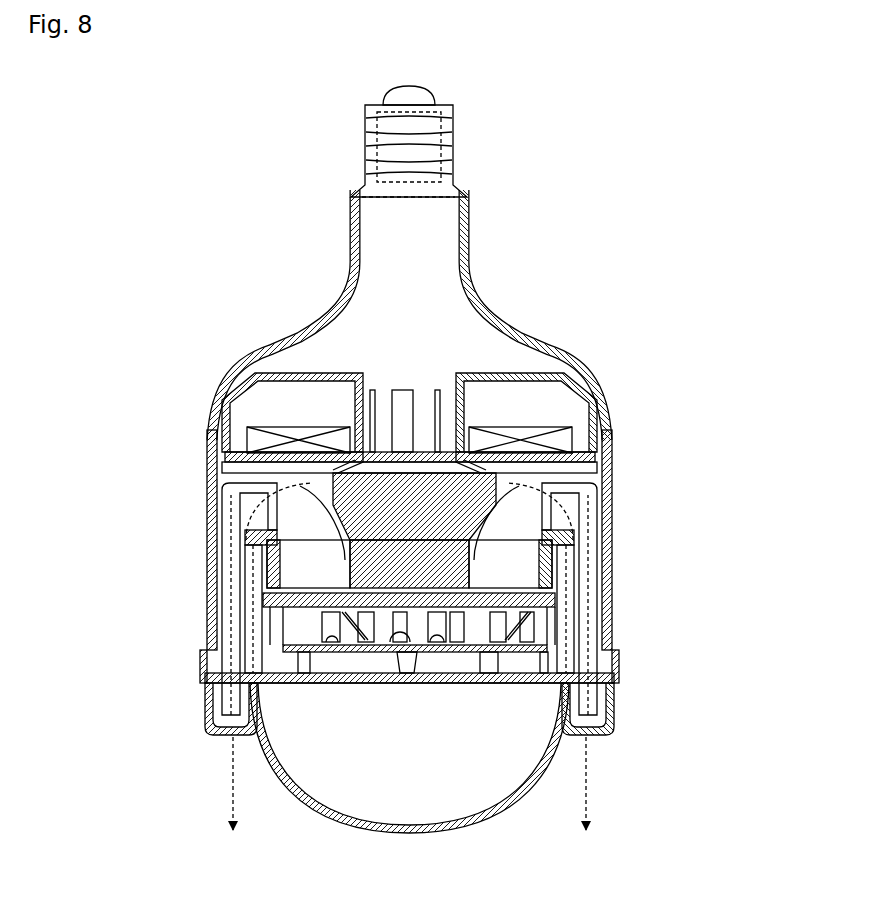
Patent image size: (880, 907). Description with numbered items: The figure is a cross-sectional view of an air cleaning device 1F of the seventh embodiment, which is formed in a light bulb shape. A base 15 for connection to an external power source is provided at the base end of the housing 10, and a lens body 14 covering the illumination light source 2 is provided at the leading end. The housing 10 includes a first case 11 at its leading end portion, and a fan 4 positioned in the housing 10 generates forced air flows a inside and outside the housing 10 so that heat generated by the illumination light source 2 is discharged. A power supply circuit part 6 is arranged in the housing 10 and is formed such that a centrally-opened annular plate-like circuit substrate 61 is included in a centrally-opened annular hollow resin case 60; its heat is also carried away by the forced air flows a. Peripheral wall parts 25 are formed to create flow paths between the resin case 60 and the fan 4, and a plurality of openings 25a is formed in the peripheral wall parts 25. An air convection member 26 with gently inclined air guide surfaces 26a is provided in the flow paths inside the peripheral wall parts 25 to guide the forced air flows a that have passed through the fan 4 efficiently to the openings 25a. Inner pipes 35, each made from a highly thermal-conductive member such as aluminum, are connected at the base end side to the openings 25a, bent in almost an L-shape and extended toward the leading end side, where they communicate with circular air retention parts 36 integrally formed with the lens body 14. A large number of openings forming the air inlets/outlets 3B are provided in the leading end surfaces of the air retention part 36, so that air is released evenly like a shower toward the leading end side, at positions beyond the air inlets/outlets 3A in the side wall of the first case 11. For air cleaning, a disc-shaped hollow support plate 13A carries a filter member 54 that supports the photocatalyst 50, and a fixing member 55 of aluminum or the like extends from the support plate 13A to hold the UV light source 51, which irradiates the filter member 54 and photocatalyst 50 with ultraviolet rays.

The air cleaning device 1F is at (560, 232).
The base 15 is at (368, 113).
The air inlets/outlets 3A is at (210, 615).
The air inlets/outlets 3B is at (226, 740).
The air retention part 36 is at (603, 733).
The lens body 14 is at (471, 836).
The forced air flows a is at (240, 802).
The power supply circuit part 6 is at (469, 414).
The resin case 60 is at (595, 383).
The circuit substrate 61 is at (568, 437).
The housing 10 is at (611, 455).
The air convection member 26 is at (388, 485).
The air guide surfaces 26a is at (350, 578).
The peripheral wall parts 25 is at (243, 541).
The openings 25a is at (235, 508).
The inner pipes 35 is at (230, 490).
The photocatalyst 50 is at (595, 549).
The support plate 13A is at (603, 572).
The first case 11 is at (614, 613).
The UV light source 51 is at (330, 653).
The fan 4 is at (366, 653).
The illumination light source 2 is at (404, 658).
The filter member 54 is at (455, 653).
The fixing member 55 is at (499, 653).